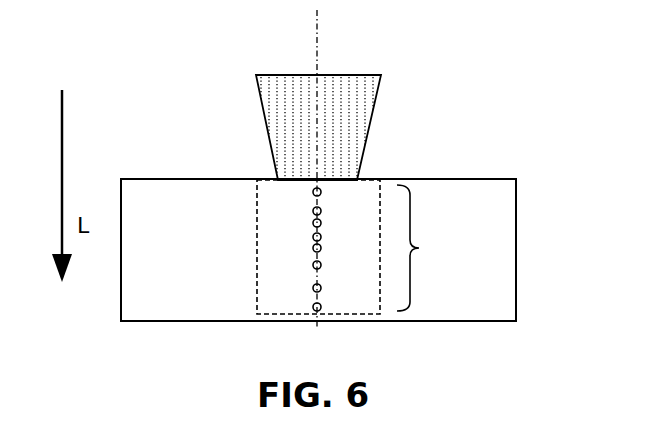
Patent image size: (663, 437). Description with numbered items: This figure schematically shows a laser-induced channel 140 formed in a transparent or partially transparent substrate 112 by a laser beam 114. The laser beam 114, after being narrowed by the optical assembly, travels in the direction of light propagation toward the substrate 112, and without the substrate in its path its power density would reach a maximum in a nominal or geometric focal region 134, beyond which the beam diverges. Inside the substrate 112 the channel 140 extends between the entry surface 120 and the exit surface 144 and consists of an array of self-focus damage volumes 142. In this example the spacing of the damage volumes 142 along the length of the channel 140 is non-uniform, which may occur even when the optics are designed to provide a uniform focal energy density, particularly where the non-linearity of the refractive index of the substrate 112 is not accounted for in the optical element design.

The substrate 112 is at (492, 178).
The laser beam 114 is at (328, 113).
The entry surface 120 is at (148, 178).
The focal region 134 is at (363, 247).
The laser-induced channel 140 is at (288, 231).
The self-focus damage volumes 142 is at (314, 267).
The exit surface 144 is at (480, 322).